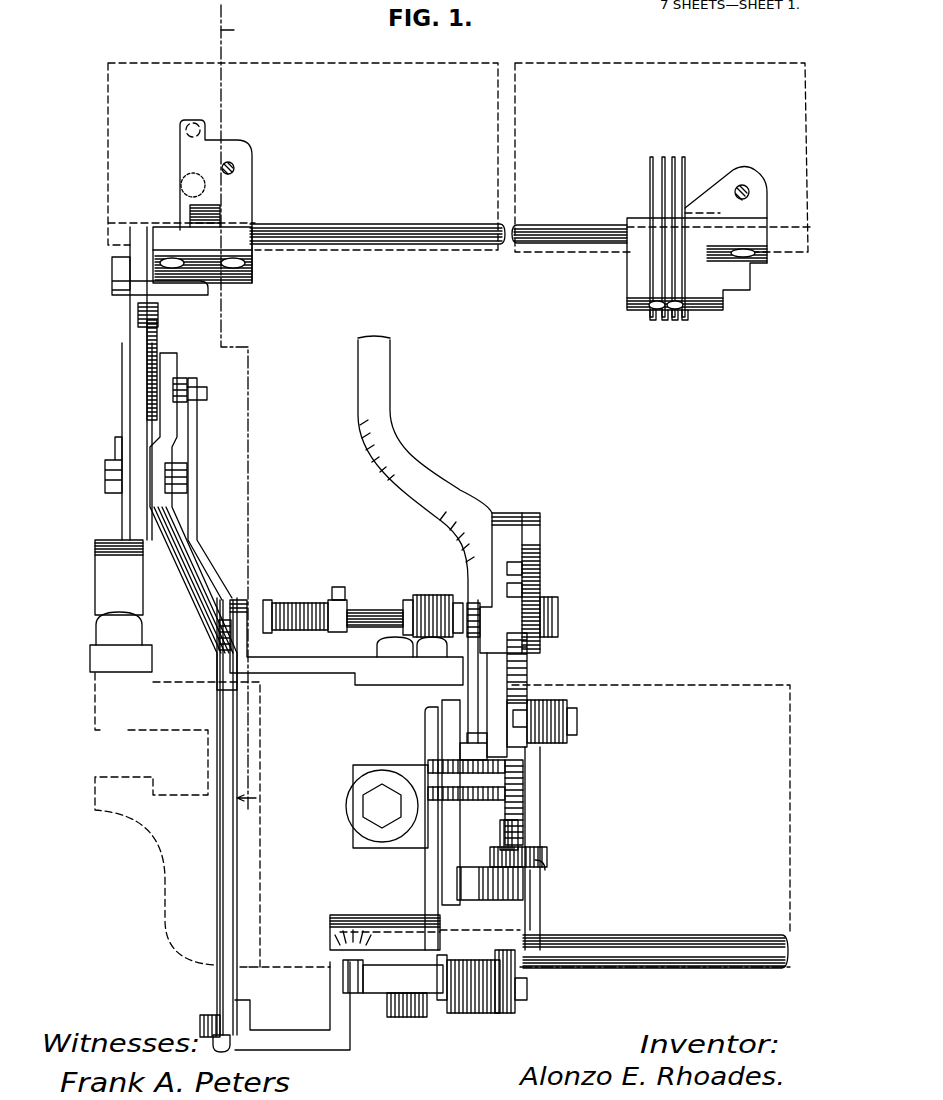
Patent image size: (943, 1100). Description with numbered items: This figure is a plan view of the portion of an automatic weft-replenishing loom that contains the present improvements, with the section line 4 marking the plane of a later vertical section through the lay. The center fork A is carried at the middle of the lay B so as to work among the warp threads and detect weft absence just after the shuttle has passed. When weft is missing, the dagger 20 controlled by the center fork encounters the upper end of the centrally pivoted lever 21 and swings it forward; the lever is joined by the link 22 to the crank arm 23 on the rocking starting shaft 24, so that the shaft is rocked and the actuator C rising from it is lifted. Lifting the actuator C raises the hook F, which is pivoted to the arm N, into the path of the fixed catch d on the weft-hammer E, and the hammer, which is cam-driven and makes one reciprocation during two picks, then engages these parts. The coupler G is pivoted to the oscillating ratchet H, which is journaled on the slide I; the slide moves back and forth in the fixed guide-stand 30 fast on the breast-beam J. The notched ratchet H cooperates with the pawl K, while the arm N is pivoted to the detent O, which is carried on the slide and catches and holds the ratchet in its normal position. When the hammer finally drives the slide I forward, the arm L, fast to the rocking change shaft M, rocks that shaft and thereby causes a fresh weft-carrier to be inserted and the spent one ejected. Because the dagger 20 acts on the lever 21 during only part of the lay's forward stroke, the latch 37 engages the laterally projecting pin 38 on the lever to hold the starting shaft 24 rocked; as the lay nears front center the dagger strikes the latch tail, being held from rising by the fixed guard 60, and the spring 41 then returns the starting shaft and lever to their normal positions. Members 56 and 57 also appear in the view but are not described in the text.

The section line 4— 4 is at (251, 416).
The center fork A is at (662, 191).
The lay B is at (303, 156).
The weft-hammer E is at (375, 378).
The breast-beam J is at (651, 808).
The dagger 20 is at (195, 290).
The centrally pivoted lever 21 is at (150, 388).
The link 22 is at (193, 442).
The crank arm 23 is at (235, 630).
The rocking starting shaft 24 is at (373, 613).
The fixed guide-stand 30 is at (430, 853).
The latch 37 is at (157, 517).
The laterally projecting pin 38 is at (177, 382).
The spring 41 is at (298, 603).
The rod 56 is at (233, 874).
The arm 57 is at (297, 1040).
The fixed guard 60 is at (110, 587).
The actuator C is at (473, 620).
The fixed catch d is at (513, 566).
The hook F is at (514, 595).
The coupler G is at (483, 752).
The oscillating ratchet H is at (510, 780).
The pawl K is at (512, 838).
The arm N is at (497, 697).
The detent O is at (515, 723).
The slide I is at (450, 913).
The arm L is at (505, 995).
The rocking change shaft M is at (717, 950).